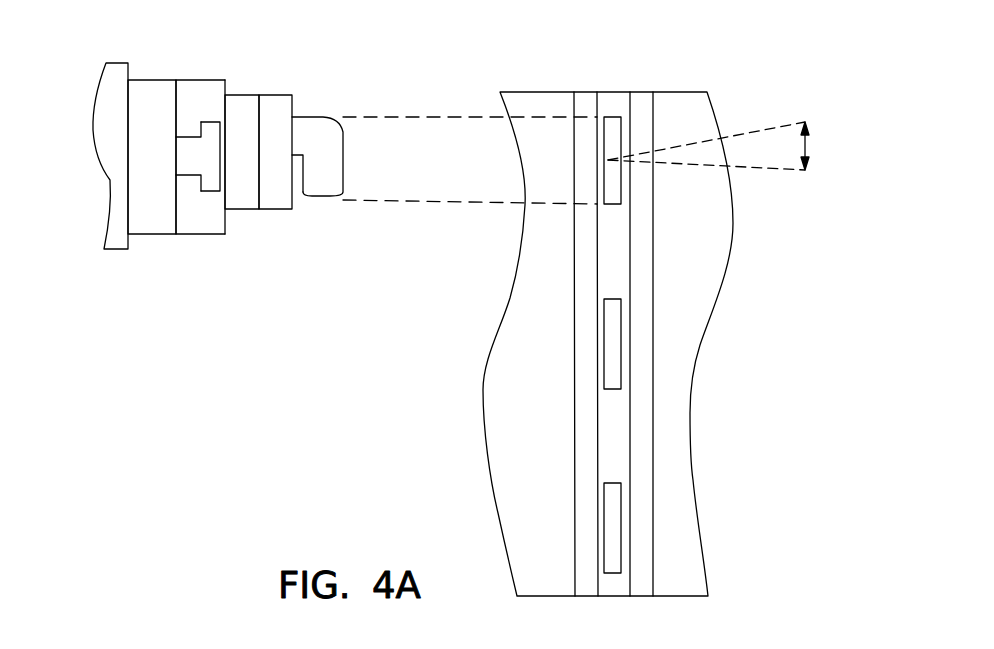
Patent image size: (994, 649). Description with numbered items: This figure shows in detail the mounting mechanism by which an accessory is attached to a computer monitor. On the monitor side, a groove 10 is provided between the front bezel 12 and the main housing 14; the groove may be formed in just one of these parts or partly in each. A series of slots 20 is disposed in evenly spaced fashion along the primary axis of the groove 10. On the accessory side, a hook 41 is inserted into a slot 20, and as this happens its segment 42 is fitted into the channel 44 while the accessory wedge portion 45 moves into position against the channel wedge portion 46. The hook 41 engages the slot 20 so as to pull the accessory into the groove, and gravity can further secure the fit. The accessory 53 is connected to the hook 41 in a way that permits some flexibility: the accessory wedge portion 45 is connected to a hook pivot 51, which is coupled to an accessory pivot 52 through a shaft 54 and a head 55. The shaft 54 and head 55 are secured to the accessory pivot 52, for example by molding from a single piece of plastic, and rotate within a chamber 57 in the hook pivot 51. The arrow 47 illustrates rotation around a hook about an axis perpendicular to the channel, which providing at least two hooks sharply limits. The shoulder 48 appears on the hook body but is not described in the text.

The groove 10 is at (622, 92).
The front bezel 12 is at (643, 92).
The main housing 14 is at (534, 92).
The slots 20 is at (621, 180).
The hook 41 is at (342, 126).
The segment 42 is at (285, 95).
The channel 44 is at (605, 95).
The accessory wedge portion 45 is at (238, 95).
The channel wedge portion 46 is at (580, 92).
The arrow 47 is at (807, 145).
The shoulder 48 is at (303, 192).
The hook pivot 51 is at (188, 80).
The accessory pivot 52 is at (154, 80).
The accessory 53 is at (95, 99).
The shaft 54 is at (191, 166).
The head 55 is at (215, 152).
The chamber 57 is at (203, 185).